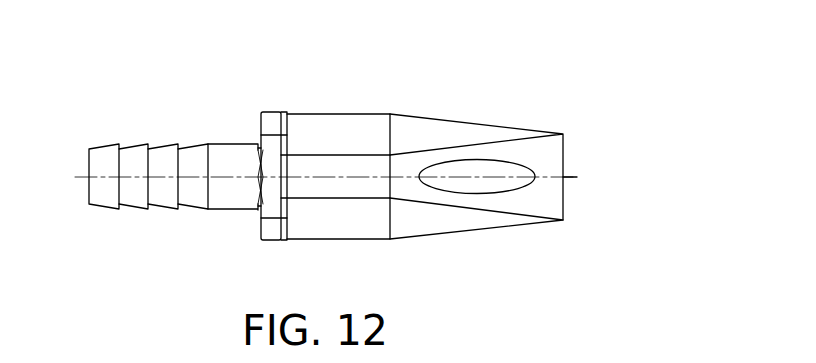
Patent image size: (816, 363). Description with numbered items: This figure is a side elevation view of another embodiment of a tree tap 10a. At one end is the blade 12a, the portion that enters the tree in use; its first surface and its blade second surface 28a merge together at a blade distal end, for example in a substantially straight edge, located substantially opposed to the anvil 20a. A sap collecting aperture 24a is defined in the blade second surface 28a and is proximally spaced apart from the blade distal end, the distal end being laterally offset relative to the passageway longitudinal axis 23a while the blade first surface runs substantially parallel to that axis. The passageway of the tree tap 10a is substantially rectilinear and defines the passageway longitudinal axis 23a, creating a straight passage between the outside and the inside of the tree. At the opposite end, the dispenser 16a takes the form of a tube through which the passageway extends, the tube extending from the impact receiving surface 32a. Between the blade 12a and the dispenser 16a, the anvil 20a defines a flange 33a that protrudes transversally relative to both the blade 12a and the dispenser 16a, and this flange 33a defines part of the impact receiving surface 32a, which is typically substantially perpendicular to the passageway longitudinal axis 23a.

The tree tap 10a is at (135, 103).
The dispenser 16a is at (102, 203).
The impact receiving surface 32a is at (261, 222).
The flange 33a is at (273, 122).
The anvil 20a is at (274, 238).
The blade 12a is at (447, 120).
The blade second surface 28a is at (432, 222).
The sap collecting aperture 24a is at (503, 188).
The passageway longitudinal axis 23a is at (577, 177).